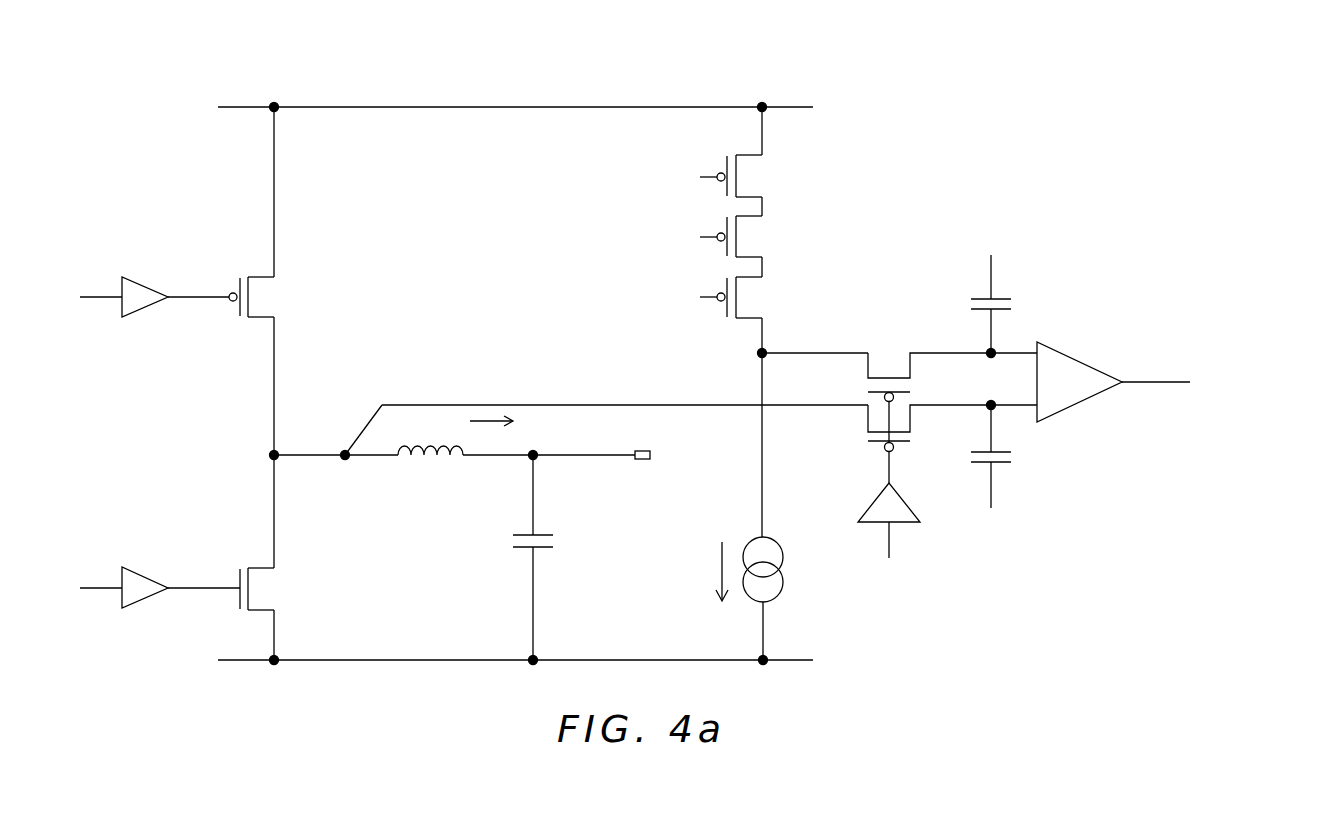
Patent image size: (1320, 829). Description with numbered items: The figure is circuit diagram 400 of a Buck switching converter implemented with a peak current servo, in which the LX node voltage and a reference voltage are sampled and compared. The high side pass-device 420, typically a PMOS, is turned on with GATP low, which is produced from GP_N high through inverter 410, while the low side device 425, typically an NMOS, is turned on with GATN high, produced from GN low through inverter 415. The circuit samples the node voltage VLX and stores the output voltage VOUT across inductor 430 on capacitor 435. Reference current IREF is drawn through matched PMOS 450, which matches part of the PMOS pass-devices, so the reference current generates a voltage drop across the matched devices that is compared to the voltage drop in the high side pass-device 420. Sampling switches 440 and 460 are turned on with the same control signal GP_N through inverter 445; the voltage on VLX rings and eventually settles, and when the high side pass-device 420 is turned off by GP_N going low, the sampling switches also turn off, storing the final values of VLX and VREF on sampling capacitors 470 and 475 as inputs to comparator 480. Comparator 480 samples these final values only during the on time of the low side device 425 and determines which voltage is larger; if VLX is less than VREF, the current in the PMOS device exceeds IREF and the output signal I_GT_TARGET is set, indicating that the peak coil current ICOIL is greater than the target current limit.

The circuit diagram 400 is at (356, 57).
The inverter 410 is at (131, 266).
The inverter 415 is at (131, 558).
The high side pass-device 420 is at (285, 275).
The low side device 425 is at (285, 566).
The inductor 430 is at (442, 468).
The capacitor 435 is at (543, 553).
The sampling switch 440 is at (852, 437).
The inverter 445 is at (862, 500).
The matched PMOS 450 is at (660, 236).
The sampling switch 460 is at (887, 363).
The sampling capacitor 470 is at (967, 303).
The sampling capacitor 475 is at (1017, 459).
The comparator 480 is at (1087, 353).